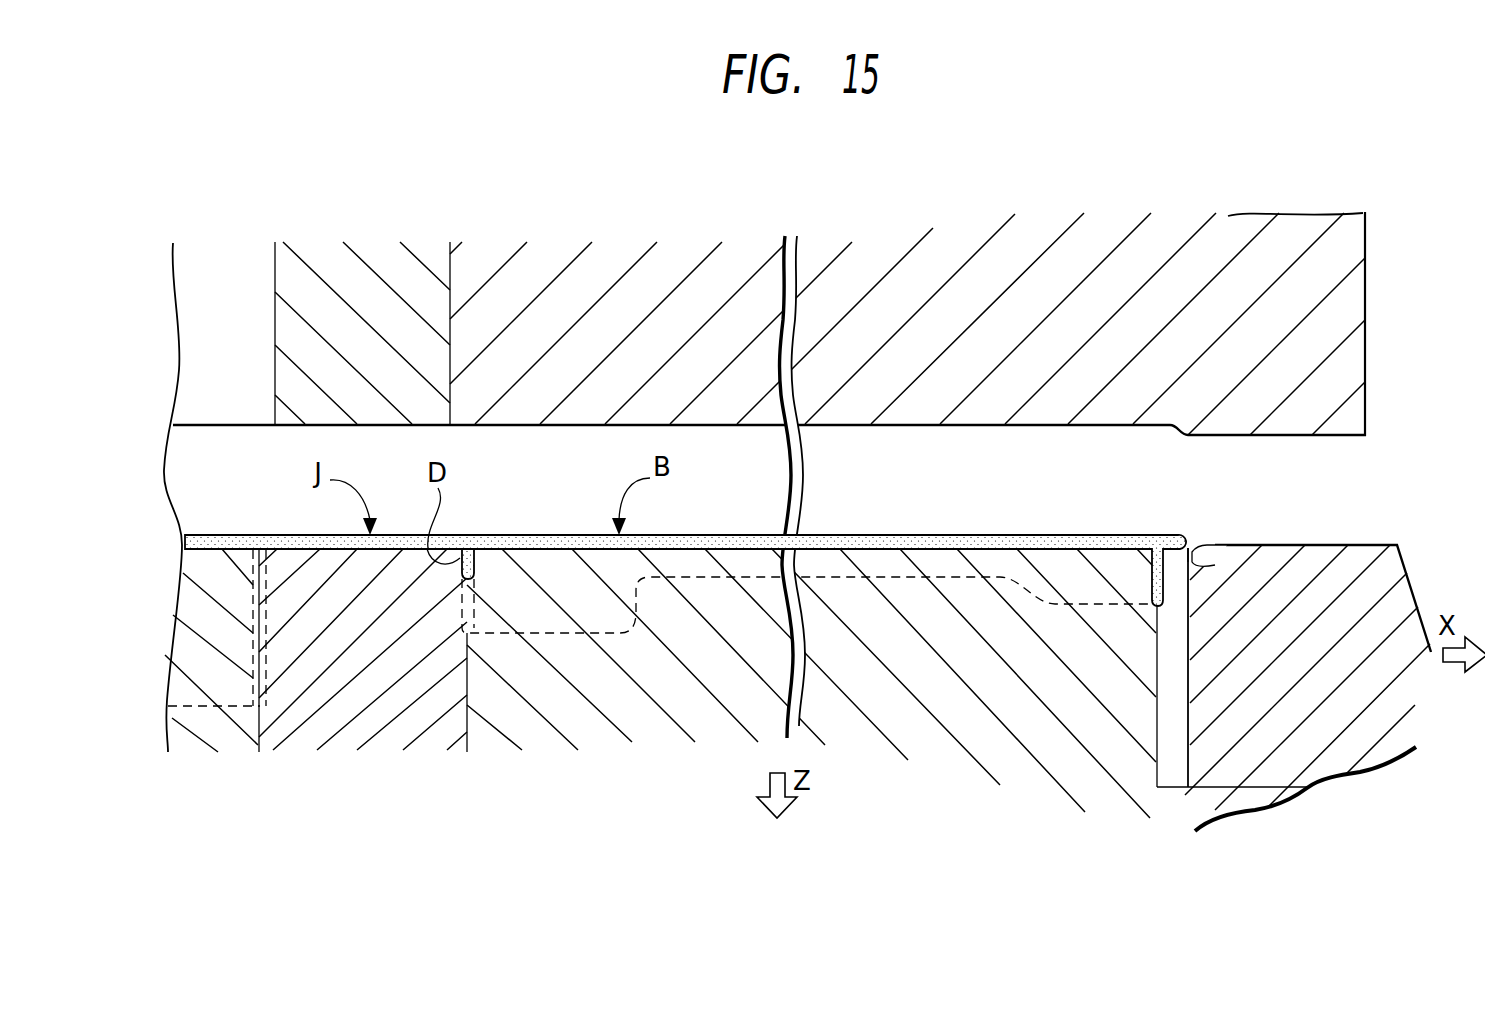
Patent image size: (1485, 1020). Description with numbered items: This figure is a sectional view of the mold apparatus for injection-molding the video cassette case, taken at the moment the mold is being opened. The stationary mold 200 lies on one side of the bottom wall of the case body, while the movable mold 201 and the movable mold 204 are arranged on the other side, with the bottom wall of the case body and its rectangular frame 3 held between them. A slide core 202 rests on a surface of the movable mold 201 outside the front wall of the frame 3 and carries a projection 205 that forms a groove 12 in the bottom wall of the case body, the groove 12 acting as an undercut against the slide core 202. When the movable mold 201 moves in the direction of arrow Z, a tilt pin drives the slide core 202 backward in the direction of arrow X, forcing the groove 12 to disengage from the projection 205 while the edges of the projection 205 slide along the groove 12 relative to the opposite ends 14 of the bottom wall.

The stationary mold 200 is at (938, 288).
The movable mold 201 is at (933, 665).
The slide core 202 is at (1322, 730).
The movable mold 204 is at (370, 657).
The projection 205 is at (1198, 545).
The opposite ends of the bottom wall 14 is at (1203, 558).
The groove 12 is at (1165, 588).
The rectangular frame 3 is at (1193, 593).